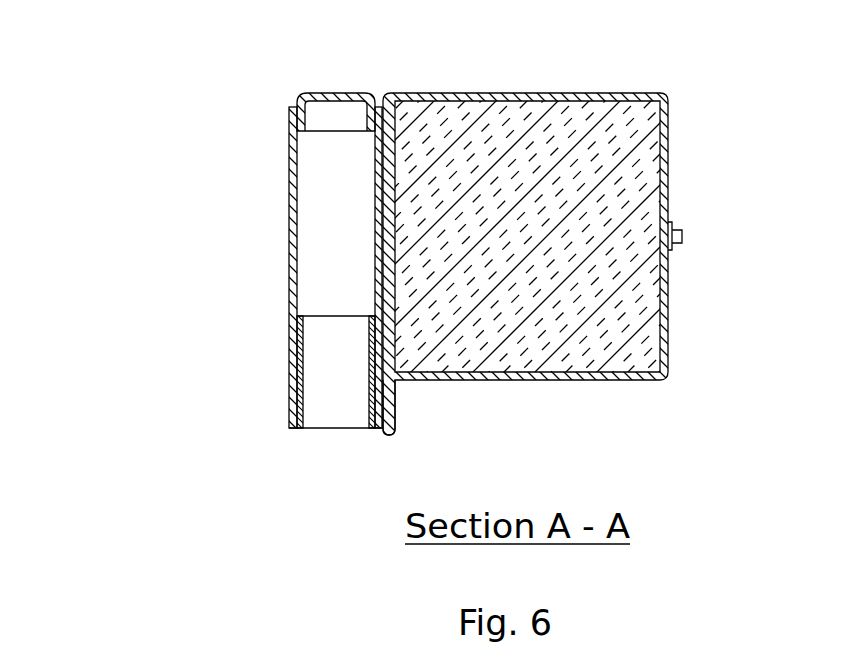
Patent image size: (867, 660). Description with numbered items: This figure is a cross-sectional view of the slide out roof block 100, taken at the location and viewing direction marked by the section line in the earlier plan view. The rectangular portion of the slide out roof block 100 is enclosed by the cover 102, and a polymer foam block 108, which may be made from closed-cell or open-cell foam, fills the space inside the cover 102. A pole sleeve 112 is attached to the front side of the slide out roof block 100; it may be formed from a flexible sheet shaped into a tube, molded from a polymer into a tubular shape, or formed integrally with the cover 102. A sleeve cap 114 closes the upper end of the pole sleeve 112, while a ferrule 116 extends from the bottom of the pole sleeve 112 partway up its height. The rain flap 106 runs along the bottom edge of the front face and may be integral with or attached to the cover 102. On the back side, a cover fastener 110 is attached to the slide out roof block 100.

The slide out roof block 100 is at (143, 70).
The cover 102 is at (527, 95).
The rain flap 106 is at (395, 432).
The polymer foam block 108 is at (652, 158).
The cover fastener 110 is at (682, 225).
The pole sleeve 112 is at (290, 230).
The sleeve cap 114 is at (333, 95).
The ferrule 116 is at (331, 316).